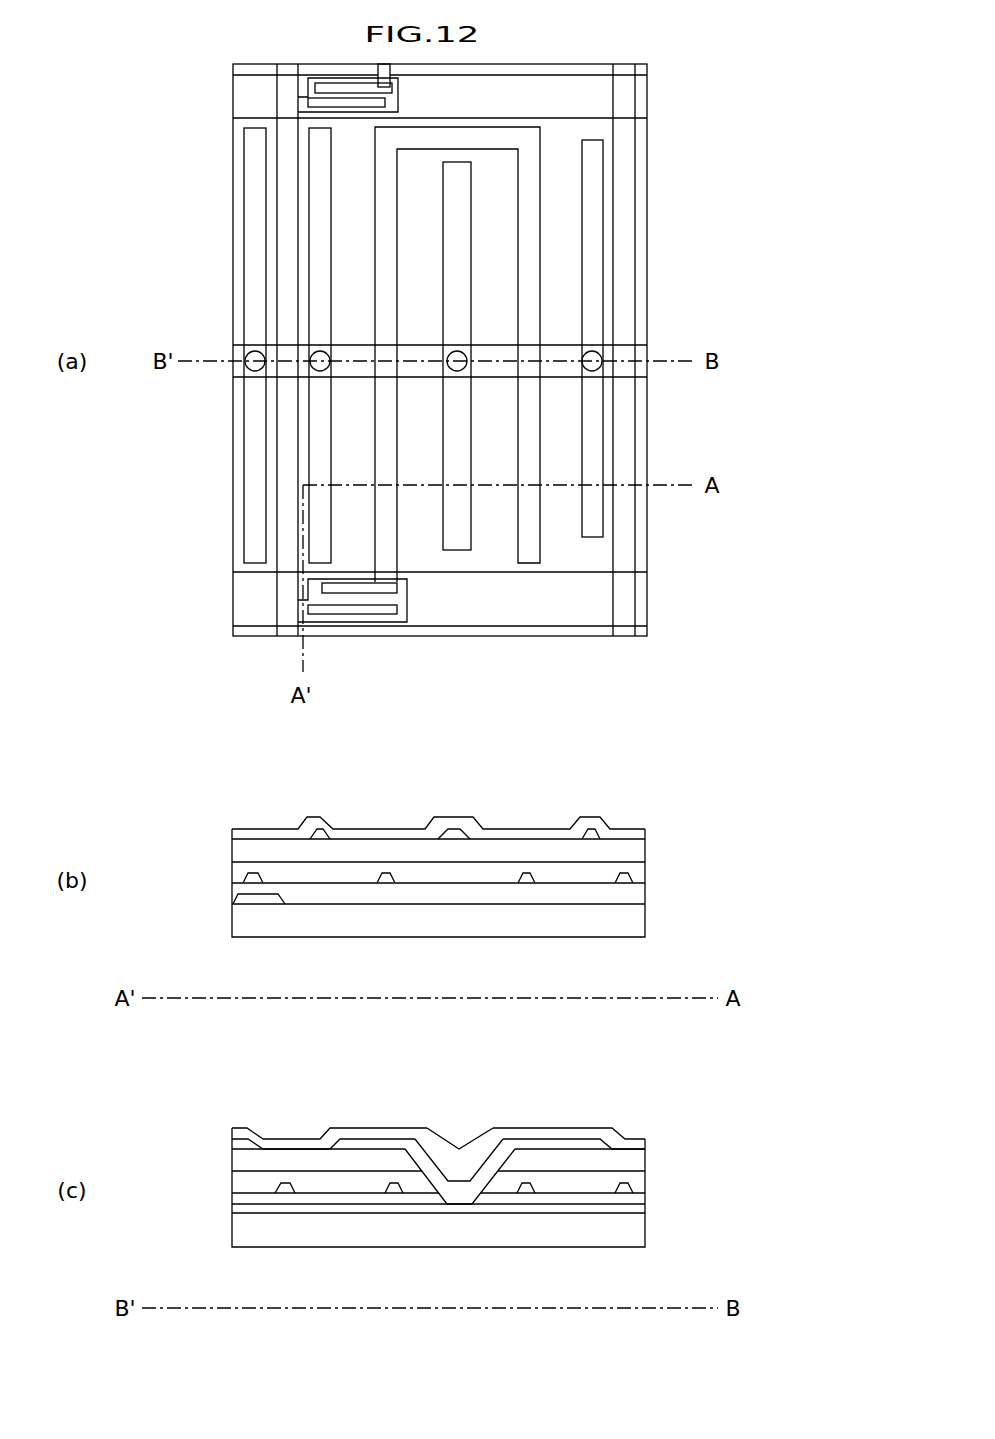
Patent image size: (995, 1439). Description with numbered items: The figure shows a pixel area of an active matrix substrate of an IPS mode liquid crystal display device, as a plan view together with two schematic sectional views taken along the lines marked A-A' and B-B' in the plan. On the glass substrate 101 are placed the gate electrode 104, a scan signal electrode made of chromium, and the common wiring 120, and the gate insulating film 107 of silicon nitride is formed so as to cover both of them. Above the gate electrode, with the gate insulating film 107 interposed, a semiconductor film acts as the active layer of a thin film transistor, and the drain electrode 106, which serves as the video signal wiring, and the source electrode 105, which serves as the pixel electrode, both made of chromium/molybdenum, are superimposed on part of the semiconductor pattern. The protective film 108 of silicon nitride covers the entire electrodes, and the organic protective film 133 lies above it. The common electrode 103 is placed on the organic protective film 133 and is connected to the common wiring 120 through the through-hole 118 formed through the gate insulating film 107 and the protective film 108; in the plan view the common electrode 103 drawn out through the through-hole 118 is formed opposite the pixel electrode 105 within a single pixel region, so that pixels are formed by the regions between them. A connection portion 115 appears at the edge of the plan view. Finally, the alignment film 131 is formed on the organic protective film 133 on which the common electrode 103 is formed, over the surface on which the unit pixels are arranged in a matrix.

The glass substrate 101 is at (322, 928).
The common electrode 103 is at (318, 232).
The gate electrode 104 is at (243, 100).
The source electrode 105 is at (528, 435).
The drain electrode 106 is at (623, 152).
The gate insulating film 107 is at (638, 893).
The protective film 108 is at (570, 870).
The connection portion 115 is at (402, 600).
The through-hole 118 is at (457, 355).
The common wiring 120 is at (237, 353).
The alignment film 131 is at (237, 829).
The organic protective film 133 is at (640, 848).